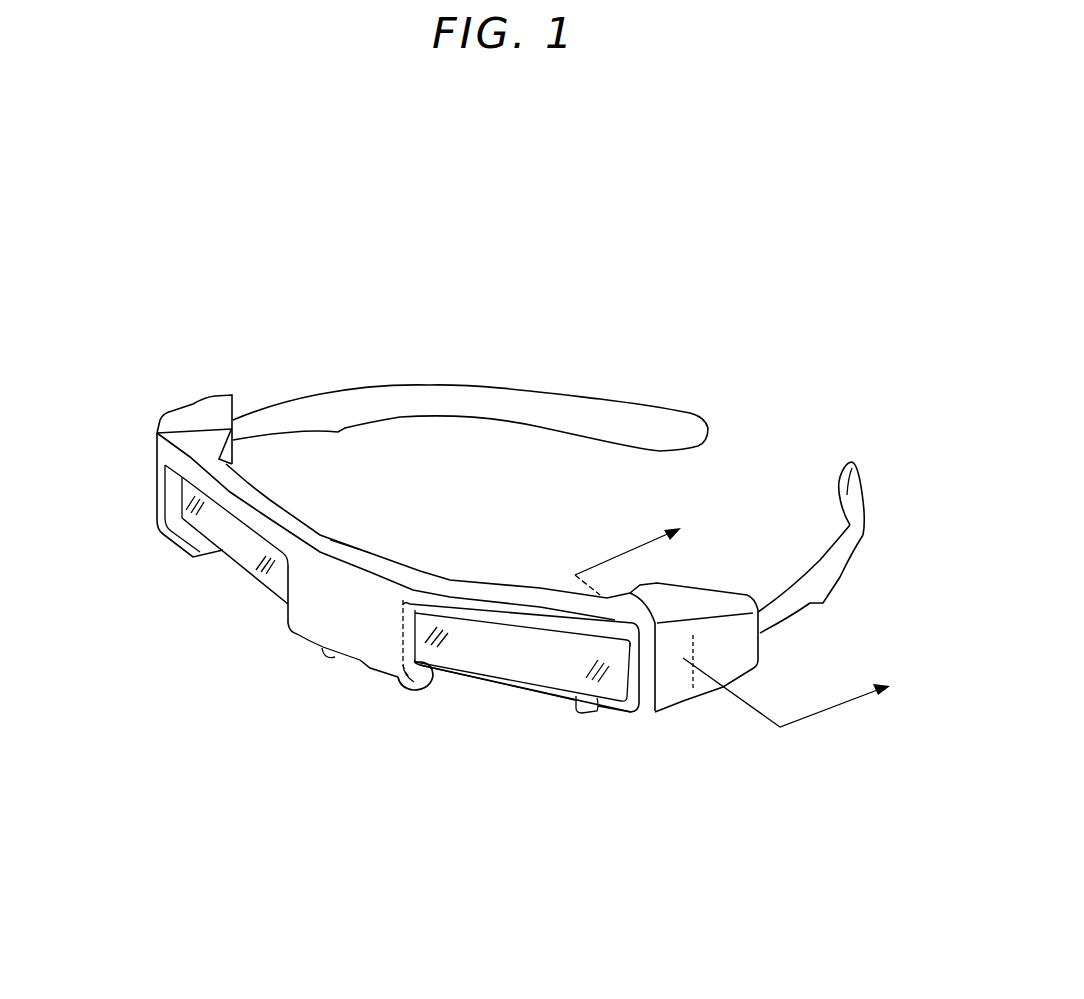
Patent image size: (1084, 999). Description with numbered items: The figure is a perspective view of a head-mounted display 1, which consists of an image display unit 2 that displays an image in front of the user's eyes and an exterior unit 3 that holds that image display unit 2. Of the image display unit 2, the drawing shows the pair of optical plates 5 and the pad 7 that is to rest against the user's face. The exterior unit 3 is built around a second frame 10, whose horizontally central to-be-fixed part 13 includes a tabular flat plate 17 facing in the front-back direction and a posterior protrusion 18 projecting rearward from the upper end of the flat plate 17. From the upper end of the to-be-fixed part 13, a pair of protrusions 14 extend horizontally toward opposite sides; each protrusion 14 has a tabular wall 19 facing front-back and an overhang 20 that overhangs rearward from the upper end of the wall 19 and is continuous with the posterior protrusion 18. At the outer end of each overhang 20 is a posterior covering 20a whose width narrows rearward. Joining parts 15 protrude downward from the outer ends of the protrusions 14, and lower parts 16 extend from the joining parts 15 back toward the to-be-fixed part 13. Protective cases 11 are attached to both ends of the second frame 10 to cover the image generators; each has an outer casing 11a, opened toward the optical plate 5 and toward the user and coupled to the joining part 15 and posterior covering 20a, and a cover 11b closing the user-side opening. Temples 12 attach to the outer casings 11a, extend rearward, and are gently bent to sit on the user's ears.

The head-mounted display 1 is at (193, 219).
The image display unit 2 is at (537, 670).
The exterior unit 3 is at (290, 633).
The optical plate 5 is at (248, 561).
The pad 7 is at (410, 690).
The second frame 10 is at (393, 563).
The protective case 11 is at (197, 408).
The outer casing 11a is at (223, 400).
The cover 11b is at (230, 453).
The temple 12 is at (477, 397).
The to-be-fixed part 13 is at (360, 657).
The protrusion 14 is at (278, 511).
The joining part 15 is at (168, 493).
The lower part 16 is at (182, 528).
The flat plate 17 is at (315, 637).
The posterior protrusion 18 is at (370, 553).
The wall 19 is at (230, 563).
The overhang 20 is at (250, 484).
The posterior covering 20a is at (162, 437).